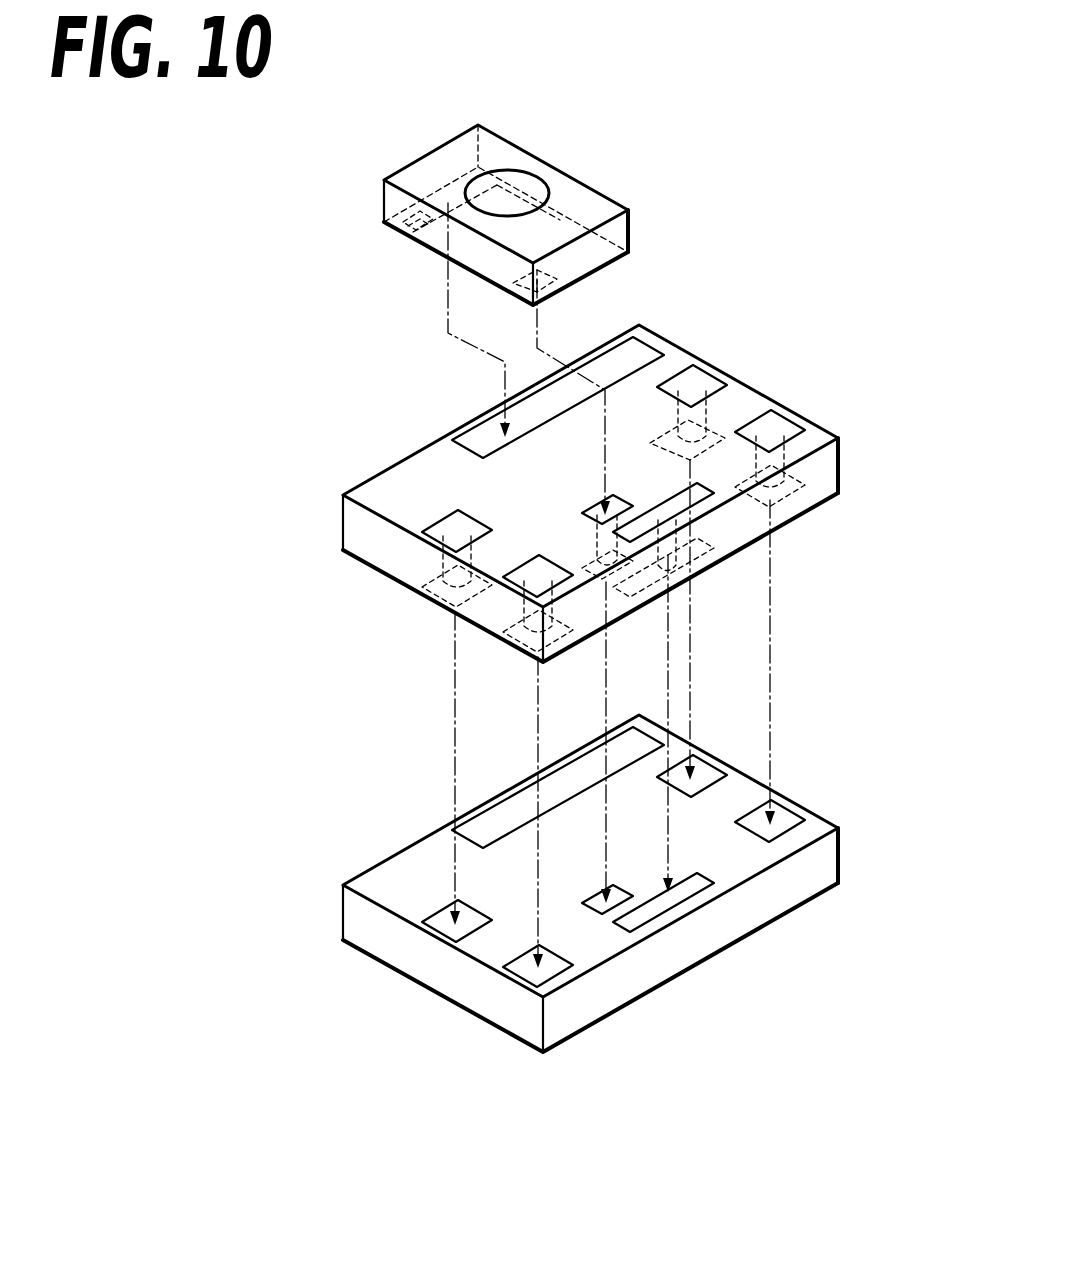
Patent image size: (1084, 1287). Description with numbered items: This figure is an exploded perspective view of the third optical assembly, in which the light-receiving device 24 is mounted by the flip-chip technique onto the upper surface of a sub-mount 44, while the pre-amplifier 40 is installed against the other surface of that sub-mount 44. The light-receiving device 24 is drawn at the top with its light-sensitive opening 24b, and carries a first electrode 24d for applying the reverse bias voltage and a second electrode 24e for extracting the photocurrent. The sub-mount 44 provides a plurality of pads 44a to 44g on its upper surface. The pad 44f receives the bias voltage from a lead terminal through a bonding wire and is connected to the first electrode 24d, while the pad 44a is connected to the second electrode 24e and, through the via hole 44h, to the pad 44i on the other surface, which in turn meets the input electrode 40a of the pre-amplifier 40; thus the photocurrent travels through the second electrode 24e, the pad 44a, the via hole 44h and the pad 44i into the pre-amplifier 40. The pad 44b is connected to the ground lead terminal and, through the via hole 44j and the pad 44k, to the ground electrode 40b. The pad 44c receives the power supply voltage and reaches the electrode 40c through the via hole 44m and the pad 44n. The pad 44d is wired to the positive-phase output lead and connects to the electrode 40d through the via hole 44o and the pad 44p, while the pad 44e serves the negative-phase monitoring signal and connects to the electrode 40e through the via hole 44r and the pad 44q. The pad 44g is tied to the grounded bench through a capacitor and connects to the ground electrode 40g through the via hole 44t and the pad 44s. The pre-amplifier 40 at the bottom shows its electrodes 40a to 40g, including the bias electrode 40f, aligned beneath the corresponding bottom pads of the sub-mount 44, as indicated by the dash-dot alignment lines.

The light-receiving device 24 is at (384, 207).
The circular opening of cap 24b is at (530, 185).
The first electrode 24d is at (415, 233).
The second electrode 24e is at (557, 281).
The pre-amplifier 40 is at (842, 858).
The input electrode 40a is at (595, 907).
The ground electrode 40b is at (455, 935).
The electrode for inputting the power supply voltage 40c is at (703, 775).
The electrode for outputting the monitoring signal with the positive phase 40d is at (775, 825).
The electrode for outputting the monitoring signal 40e is at (550, 975).
The electrode 40f is at (475, 828).
The electrode for the ground 40g is at (660, 906).
The sub-mount 44 is at (343, 522).
The pad 44a is at (600, 507).
The pad 44b is at (465, 530).
The pad 44c is at (700, 385).
The pad 44d is at (798, 425).
The pad 44e is at (542, 573).
The pad 44f is at (625, 355).
The pad 44g is at (700, 490).
The via hole 44h is at (595, 538).
The pad 44i is at (597, 607).
The via hole 44j is at (440, 580).
The pad 44k is at (440, 605).
The via hole 44m is at (676, 422).
The pad 44n is at (658, 437).
The via hole 44o is at (810, 510).
The pad 44p is at (790, 505).
The pad 44q is at (540, 672).
The via hole 44r is at (551, 680).
The pad 44s is at (648, 600).
The via hole 44t is at (690, 598).